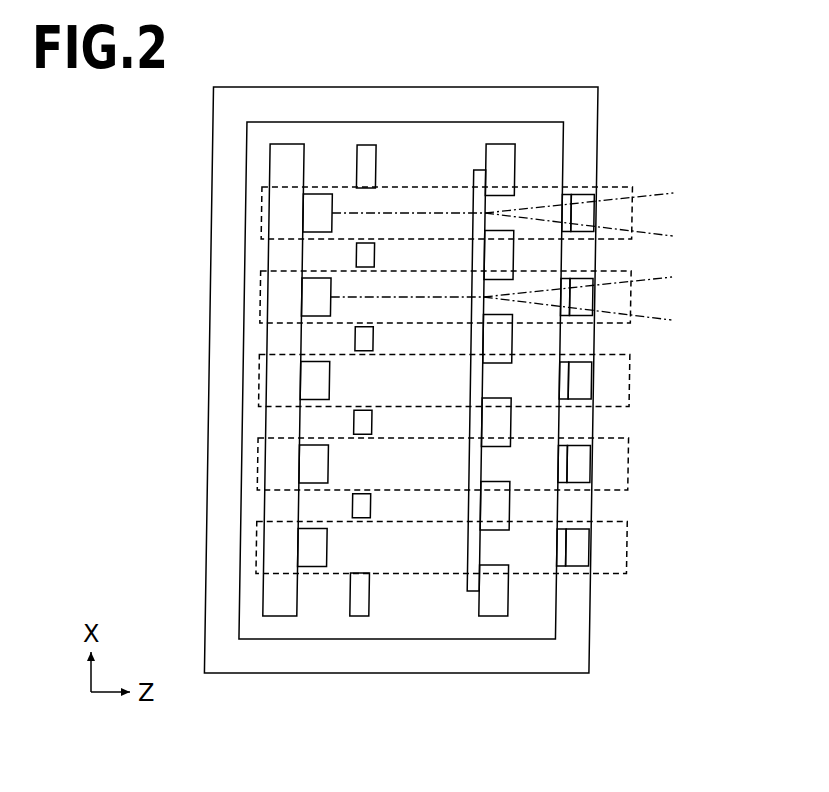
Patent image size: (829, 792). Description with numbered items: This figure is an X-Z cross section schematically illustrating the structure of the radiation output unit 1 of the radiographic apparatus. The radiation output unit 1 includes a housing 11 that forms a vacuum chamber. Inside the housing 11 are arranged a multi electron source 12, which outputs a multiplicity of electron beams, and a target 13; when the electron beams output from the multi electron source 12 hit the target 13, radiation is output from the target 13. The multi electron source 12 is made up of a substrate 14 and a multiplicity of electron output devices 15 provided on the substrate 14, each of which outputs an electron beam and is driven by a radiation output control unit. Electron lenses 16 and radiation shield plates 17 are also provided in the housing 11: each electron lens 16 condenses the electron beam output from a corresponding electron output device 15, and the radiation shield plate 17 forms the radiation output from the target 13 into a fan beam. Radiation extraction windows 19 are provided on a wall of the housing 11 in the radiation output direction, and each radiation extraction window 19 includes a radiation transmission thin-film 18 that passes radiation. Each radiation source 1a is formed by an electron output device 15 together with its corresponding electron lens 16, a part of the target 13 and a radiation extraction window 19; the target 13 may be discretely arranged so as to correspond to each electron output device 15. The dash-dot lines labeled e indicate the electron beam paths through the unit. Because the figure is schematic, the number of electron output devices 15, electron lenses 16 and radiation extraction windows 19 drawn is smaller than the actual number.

The radiation output unit 1 is at (650, 57).
The radiation source 1a is at (622, 188).
The housing 11 is at (450, 105).
The multi electron source 12 is at (284, 142).
The target 13 is at (482, 591).
The substrate 14 is at (284, 205).
The electron output device 15 is at (314, 216).
The electron lens 16 is at (369, 152).
The radiation shield plate 17 is at (504, 155).
The radiation transmission thin-film 18 is at (569, 193).
The radiation extraction window 19 is at (587, 213).
The emitted light e is at (501, 254).